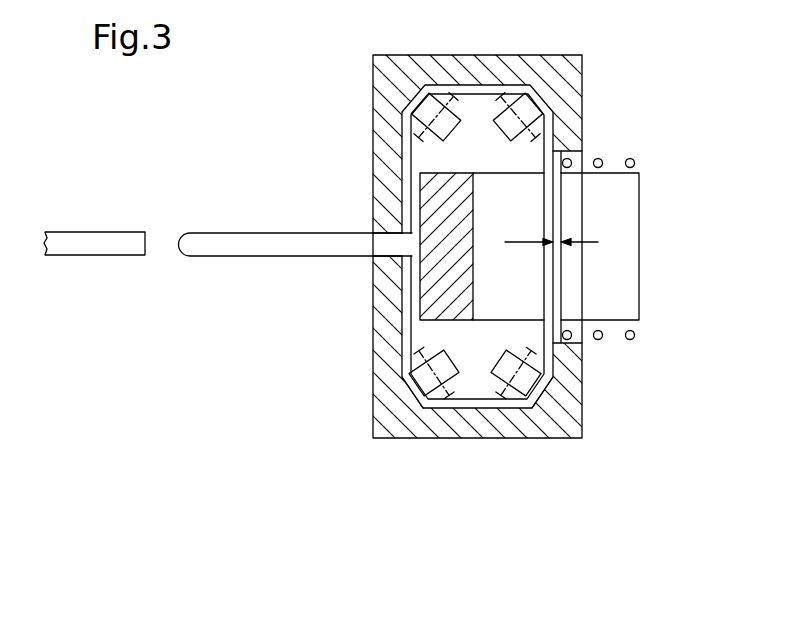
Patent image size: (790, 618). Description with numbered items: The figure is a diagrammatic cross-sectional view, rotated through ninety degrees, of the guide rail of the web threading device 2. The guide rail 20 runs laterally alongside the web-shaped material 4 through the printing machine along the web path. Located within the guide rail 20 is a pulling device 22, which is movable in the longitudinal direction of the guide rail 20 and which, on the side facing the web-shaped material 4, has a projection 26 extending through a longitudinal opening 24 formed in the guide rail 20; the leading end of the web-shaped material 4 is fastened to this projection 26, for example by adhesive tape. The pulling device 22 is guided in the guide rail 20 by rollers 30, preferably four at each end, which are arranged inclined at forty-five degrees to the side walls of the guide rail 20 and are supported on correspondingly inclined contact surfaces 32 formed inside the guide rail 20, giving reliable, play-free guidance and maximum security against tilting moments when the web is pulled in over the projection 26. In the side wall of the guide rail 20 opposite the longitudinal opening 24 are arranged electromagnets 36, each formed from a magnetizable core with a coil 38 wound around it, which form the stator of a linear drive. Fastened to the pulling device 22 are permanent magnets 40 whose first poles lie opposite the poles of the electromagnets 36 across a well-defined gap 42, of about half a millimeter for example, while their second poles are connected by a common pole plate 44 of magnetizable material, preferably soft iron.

The web threading device 2 is at (292, 108).
The web-shaped material 4 is at (90, 242).
The guide rail 20 is at (475, 72).
The pulling device 22 is at (538, 152).
The longitudinal opening 24 is at (372, 228).
The projection 26 is at (272, 246).
The rollers 30 is at (412, 375).
The contact surfaces 32 is at (530, 437).
The electromagnets 36 is at (623, 218).
The coil 38 is at (635, 163).
The permanent magnets 40 is at (520, 285).
The gap 42 is at (557, 244).
The common pole plate 44 is at (432, 292).